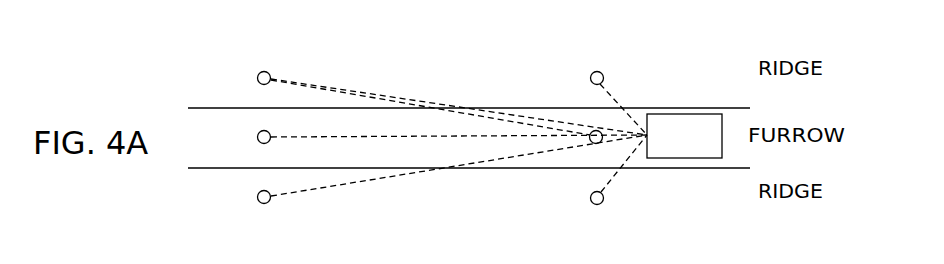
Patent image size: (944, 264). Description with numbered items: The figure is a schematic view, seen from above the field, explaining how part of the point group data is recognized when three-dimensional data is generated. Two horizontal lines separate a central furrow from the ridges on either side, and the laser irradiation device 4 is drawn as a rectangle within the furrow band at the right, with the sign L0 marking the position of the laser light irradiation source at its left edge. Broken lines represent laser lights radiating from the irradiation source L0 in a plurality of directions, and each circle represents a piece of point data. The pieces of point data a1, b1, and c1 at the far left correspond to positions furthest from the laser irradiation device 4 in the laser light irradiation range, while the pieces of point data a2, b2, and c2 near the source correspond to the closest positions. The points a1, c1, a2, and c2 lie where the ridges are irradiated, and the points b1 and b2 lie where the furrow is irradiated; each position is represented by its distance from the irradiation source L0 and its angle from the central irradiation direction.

The laser irradiation device 4 is at (683, 113).
The point data a1 is at (240, 78).
The point data b1 is at (240, 138).
The point data c1 is at (240, 197).
The point data a2 is at (595, 62).
The point data b2 is at (593, 130).
The point data c2 is at (600, 216).
The laser light irradiation source L0 is at (647, 135).